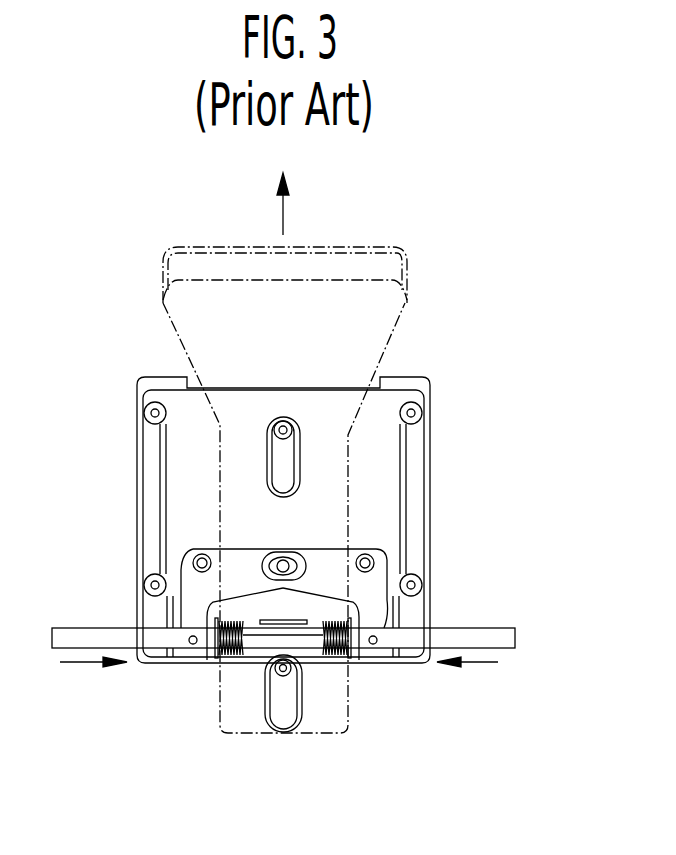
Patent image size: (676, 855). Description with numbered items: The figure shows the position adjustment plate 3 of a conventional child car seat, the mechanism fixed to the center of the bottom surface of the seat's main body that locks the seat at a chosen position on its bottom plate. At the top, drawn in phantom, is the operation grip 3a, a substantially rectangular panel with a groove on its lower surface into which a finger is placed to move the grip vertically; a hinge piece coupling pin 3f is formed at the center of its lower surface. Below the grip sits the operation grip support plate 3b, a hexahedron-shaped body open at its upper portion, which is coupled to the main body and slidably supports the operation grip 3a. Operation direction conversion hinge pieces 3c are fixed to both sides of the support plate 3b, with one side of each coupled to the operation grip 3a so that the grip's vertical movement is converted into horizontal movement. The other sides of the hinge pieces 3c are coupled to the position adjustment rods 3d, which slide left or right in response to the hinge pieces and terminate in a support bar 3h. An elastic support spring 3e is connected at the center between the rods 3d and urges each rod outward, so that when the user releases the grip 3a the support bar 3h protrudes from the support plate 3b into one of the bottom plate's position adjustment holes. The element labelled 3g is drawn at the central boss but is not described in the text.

The position adjustment plate 3 is at (104, 420).
The operation grip 3a is at (318, 248).
The operation grip support plate 3b is at (290, 473).
The operation direction conversion hinge piece 3c is at (375, 560).
The position adjustment rod 3d is at (420, 582).
The elastic support spring 3e is at (330, 642).
The hinge piece coupling pin 3f is at (432, 468).
The boss 3g is at (300, 556).
The support bar 3h is at (290, 426).